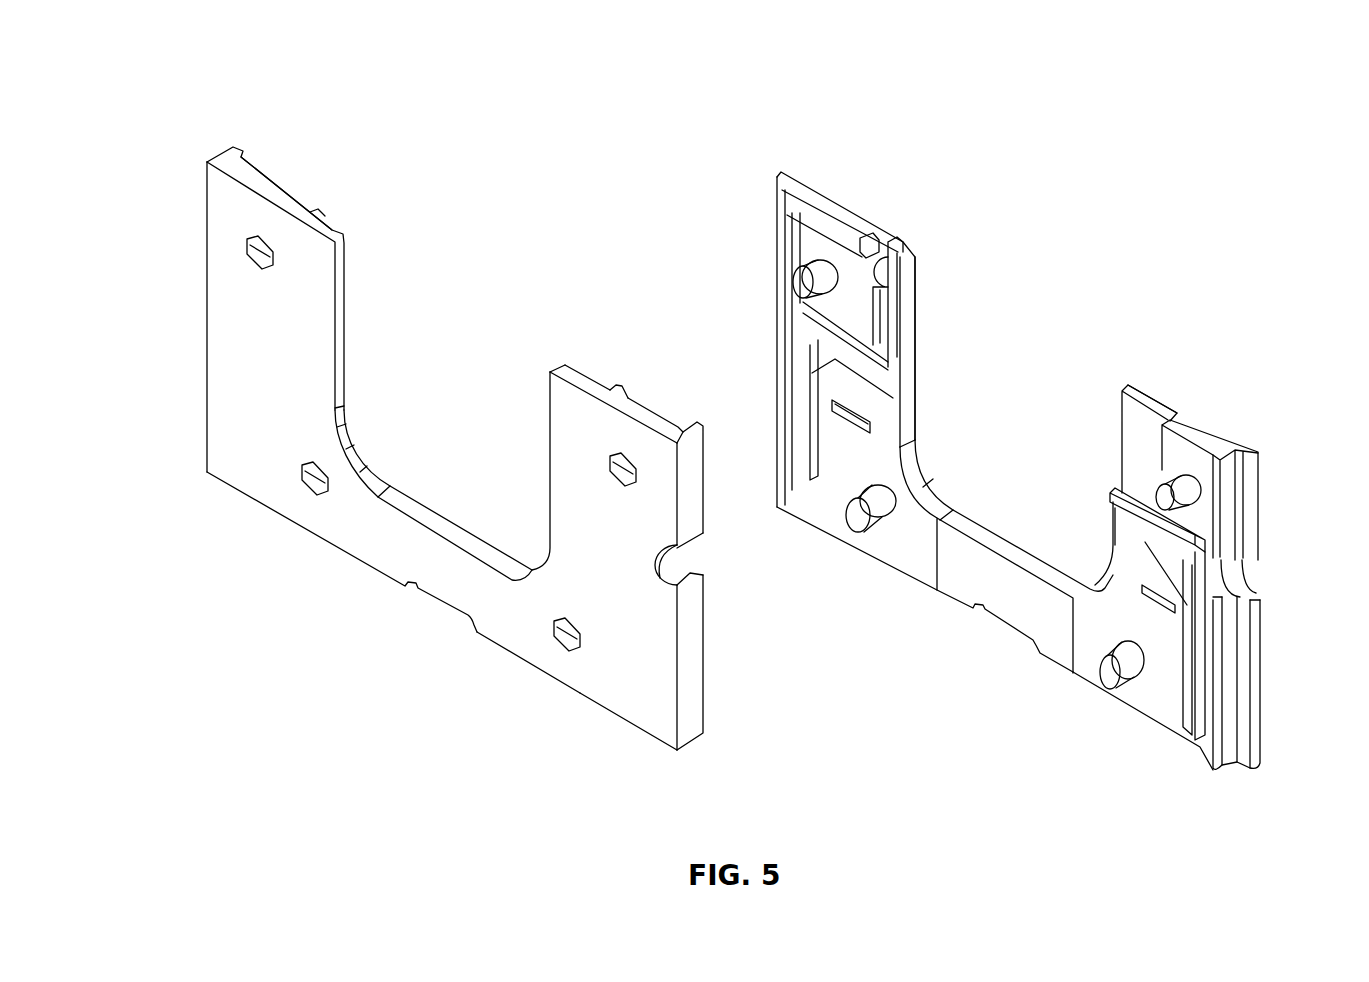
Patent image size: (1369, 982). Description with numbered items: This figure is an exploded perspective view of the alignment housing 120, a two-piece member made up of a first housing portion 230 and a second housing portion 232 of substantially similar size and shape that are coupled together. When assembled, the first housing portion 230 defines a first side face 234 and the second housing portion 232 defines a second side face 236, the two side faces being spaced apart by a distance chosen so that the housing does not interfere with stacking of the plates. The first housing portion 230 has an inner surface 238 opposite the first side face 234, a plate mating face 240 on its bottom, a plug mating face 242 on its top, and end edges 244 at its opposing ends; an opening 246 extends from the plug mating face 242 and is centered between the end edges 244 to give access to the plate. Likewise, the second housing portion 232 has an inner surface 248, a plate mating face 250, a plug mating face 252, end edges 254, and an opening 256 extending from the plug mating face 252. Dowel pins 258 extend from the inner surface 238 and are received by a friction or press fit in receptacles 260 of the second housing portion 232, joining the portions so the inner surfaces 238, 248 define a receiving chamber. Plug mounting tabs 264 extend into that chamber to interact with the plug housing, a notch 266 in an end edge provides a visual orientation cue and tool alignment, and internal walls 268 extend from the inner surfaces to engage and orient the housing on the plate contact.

The alignment housing 120 is at (236, 88).
The first housing portion 230 is at (1183, 425).
The second housing portion 232 is at (633, 713).
The first side face 234 is at (1240, 432).
The second side face 236 is at (607, 673).
The inner surface 238 is at (1167, 720).
The plate mating face 240 is at (1052, 665).
The plug mating face 242 is at (1137, 385).
The end edges 244 is at (775, 256).
The opening 246 is at (1008, 380).
The inner surface 248 is at (628, 394).
The plate mating face 250 is at (480, 633).
The plug mating face 252 is at (258, 182).
The end edges 254 is at (205, 295).
The opening 256 is at (428, 335).
The dowel pins 258 is at (880, 518).
The receptacles 260 is at (320, 483).
The plug mounting tabs 264 is at (878, 278).
The notch 266 is at (692, 553).
The internal walls 268 is at (1108, 512).